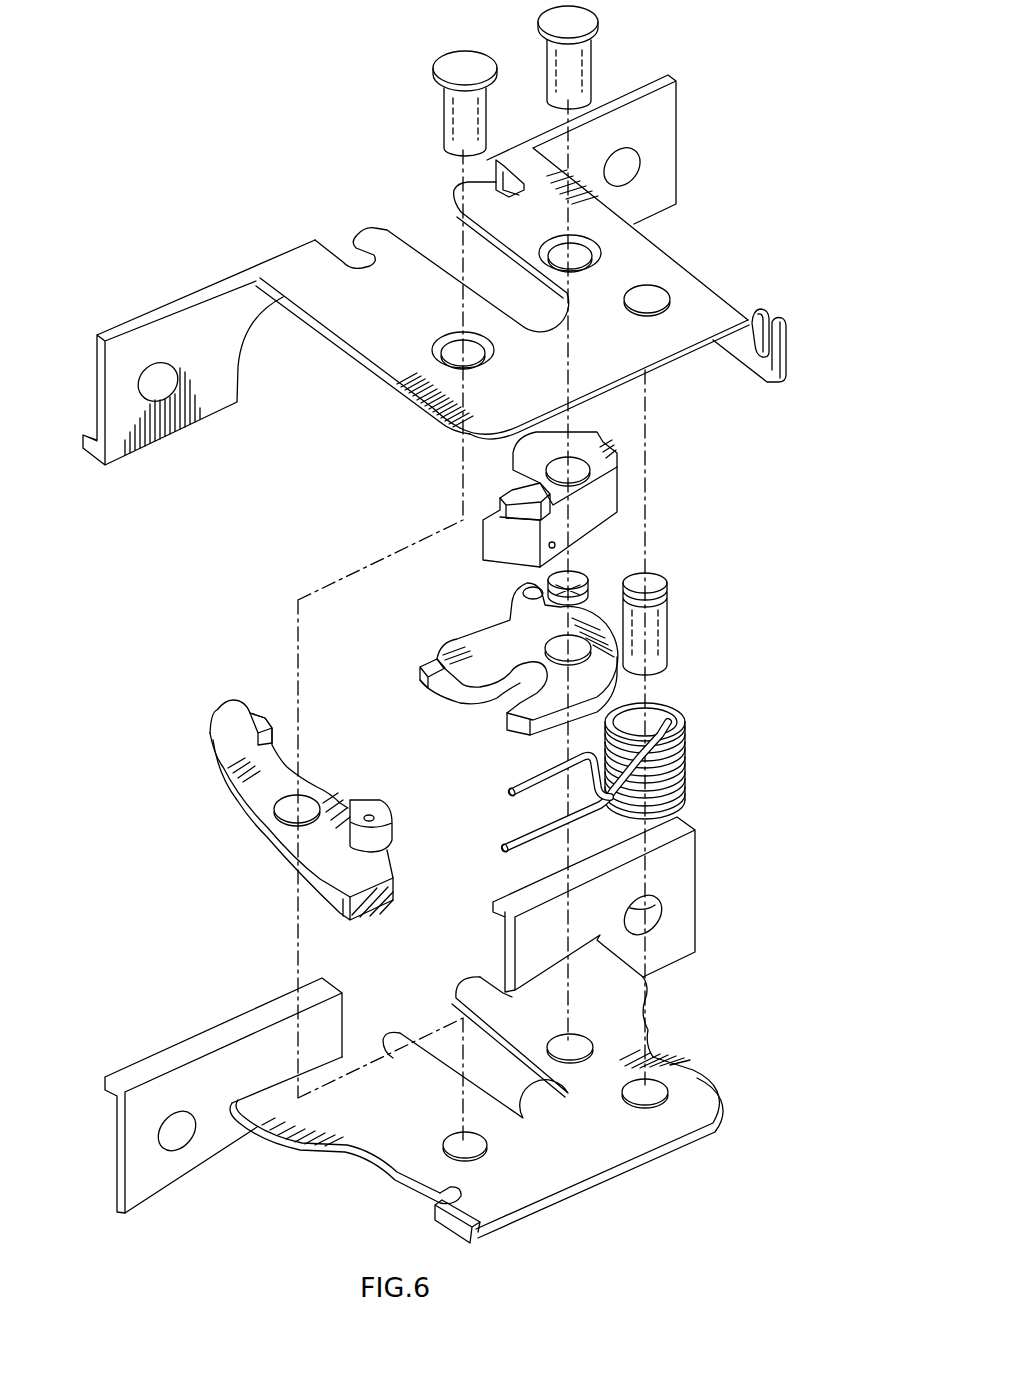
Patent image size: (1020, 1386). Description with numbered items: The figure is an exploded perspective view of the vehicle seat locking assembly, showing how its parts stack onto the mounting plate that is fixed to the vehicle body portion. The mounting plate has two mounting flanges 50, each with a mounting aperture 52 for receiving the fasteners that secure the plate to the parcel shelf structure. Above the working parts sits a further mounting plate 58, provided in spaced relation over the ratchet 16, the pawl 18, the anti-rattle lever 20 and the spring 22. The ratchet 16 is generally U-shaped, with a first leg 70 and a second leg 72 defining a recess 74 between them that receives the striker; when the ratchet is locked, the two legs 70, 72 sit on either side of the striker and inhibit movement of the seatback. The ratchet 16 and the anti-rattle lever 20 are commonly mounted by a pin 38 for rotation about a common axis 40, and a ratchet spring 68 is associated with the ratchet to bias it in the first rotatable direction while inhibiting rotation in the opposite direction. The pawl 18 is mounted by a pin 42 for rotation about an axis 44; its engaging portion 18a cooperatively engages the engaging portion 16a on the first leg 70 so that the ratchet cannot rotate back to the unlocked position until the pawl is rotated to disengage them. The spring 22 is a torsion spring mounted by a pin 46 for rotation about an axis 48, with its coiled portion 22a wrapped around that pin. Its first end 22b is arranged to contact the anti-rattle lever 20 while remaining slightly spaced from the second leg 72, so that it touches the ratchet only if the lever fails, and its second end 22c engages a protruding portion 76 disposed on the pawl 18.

The ratchet 16 is at (505, 685).
The engaging portion of the first leg 16a is at (428, 665).
The pawl 18 is at (312, 774).
The engaging portion of the pawl 18a is at (258, 716).
The anti-rattle lever 20 is at (618, 458).
The spring 22 is at (605, 764).
The coiled portion 22a is at (672, 771).
The first end 22b is at (516, 800).
The second end 22c is at (520, 850).
The pin 38 is at (580, 70).
The common axis 40 is at (567, 990).
The pin 42 is at (467, 115).
The axis 44 is at (393, 1057).
The pin 46 is at (650, 634).
The axis 48 is at (416, 1030).
The mounting flange 50 is at (222, 1065).
The mounting aperture 52 is at (168, 1135).
The further mounting plate 58 is at (308, 262).
The ratchet spring 68 is at (573, 578).
The first leg 70 is at (492, 638).
The second leg 72 is at (557, 722).
The recess 74 is at (488, 714).
The protruding portion 76 is at (377, 838).